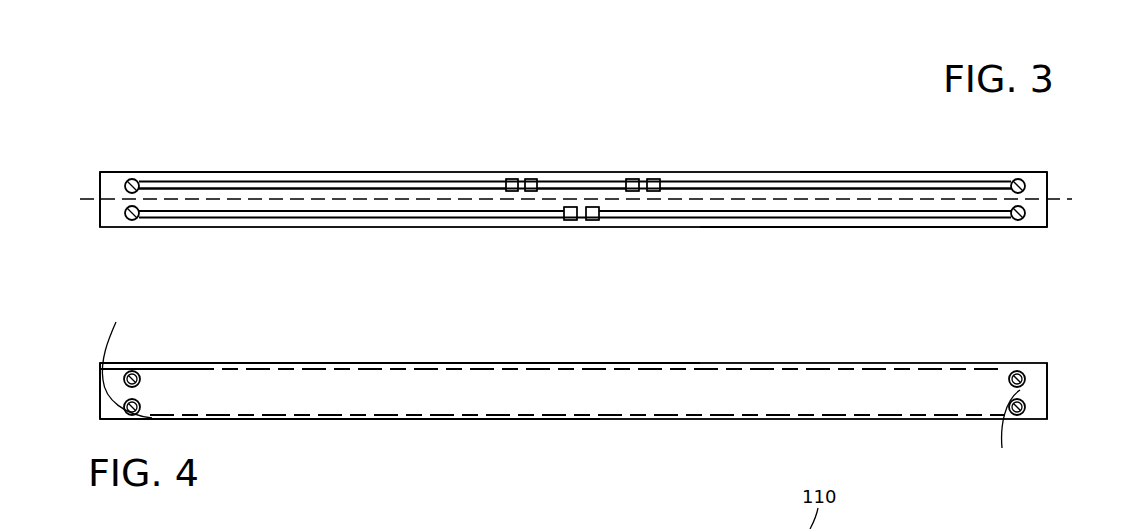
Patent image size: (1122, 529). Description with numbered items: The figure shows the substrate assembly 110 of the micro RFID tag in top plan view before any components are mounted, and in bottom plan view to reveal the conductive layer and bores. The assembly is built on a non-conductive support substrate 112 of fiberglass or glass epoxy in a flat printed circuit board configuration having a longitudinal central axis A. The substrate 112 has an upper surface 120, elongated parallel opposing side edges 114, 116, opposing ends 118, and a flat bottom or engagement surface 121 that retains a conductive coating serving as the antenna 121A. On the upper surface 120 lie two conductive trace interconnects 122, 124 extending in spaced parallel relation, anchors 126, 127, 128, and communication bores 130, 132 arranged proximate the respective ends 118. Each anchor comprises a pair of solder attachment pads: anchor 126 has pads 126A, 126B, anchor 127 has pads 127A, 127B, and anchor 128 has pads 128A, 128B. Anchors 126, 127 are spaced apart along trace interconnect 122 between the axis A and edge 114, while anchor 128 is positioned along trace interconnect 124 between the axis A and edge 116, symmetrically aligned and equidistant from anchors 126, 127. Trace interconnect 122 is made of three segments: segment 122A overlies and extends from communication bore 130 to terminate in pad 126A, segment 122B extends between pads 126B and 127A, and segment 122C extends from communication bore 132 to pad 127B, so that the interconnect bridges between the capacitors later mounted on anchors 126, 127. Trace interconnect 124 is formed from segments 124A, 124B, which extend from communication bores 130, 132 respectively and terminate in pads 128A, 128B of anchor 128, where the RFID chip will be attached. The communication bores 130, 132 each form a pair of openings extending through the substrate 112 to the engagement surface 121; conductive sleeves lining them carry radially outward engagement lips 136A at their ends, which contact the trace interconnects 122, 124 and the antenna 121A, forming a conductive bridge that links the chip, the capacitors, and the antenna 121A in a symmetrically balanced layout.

In FIG. 3, the substrate assembly 110 is at (774, 140).
In FIG. 4, the substrate assembly 110 is at (834, 361).
In FIG. 3, the non-conductive support substrate 112 is at (325, 168).
In FIG. 4, the non-conductive support substrate 112 is at (278, 362).
In FIG. 3, the side edge 114 is at (942, 171).
In FIG. 4, the side edge 114 is at (335, 420).
In FIG. 3, the side edge 116 is at (905, 228).
In FIG. 4, the side edge 116 is at (343, 363).
In FIG. 3, the end 118 is at (100, 222).
In FIG. 4, the end 118 is at (100, 395).
In FIG. 3, the upper surface 120 is at (243, 179).
In FIG. 4, the engagement surface 121 is at (931, 420).
In FIG. 4, the antenna 121A is at (937, 364).
In FIG. 3, the conductive trace interconnect 122 is at (587, 190).
In FIG. 3, the trace interconnect segment 122A is at (358, 183).
In FIG. 3, the trace interconnect segment 122B is at (590, 183).
In FIG. 3, the trace interconnect segment 122C is at (830, 180).
In FIG. 3, the conductive trace interconnect 124 is at (418, 218).
In FIG. 3, the trace interconnect segment 124A is at (305, 219).
In FIG. 3, the trace interconnect segment 124B is at (849, 219).
In FIG. 3, the anchor 126 is at (531, 176).
In FIG. 3, the component solder attachment pad 126A is at (509, 178).
In FIG. 3, the component solder attachment pad 126B is at (540, 178).
In FIG. 3, the anchor 127 is at (655, 172).
In FIG. 3, the component solder attachment pad 127A is at (632, 178).
In FIG. 3, the component solder attachment pad 127B is at (656, 178).
In FIG. 3, the anchor 128 is at (571, 222).
In FIG. 3, the component solder attachment pad 128A is at (567, 222).
In FIG. 3, the component solder attachment pad 128B is at (594, 221).
In FIG. 3, the communication bore 130 is at (139, 213).
In FIG. 4, the communication bore 130 is at (145, 412).
In FIG. 3, the communication bore 132 is at (1025, 186).
In FIG. 4, the communication bore 132 is at (1026, 380).
In FIG. 4, the engagement lip 136A is at (563, 385).
In FIG. 3, the longitudinal central axis A is at (80, 200).